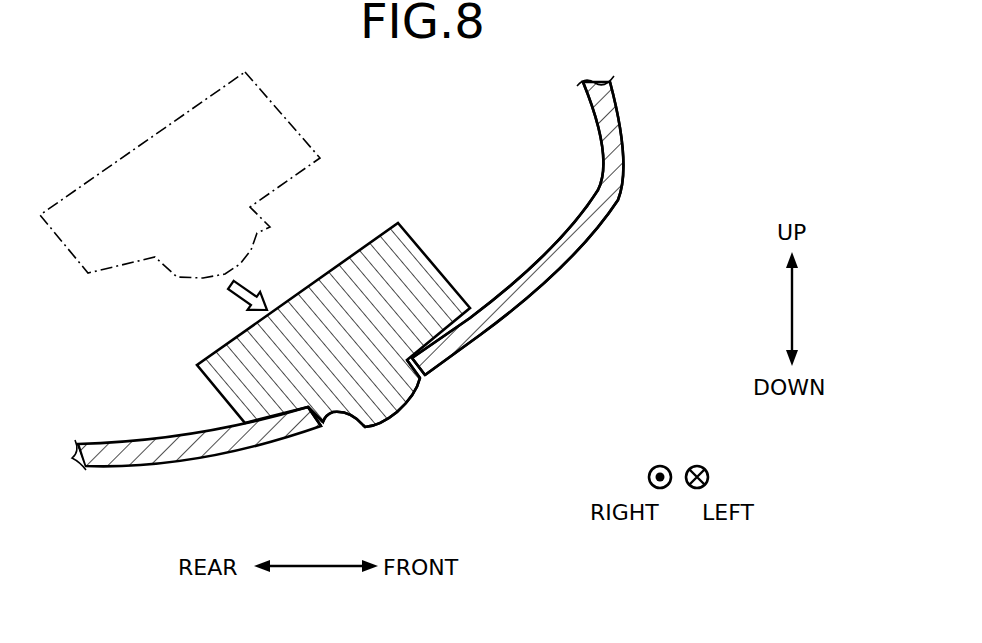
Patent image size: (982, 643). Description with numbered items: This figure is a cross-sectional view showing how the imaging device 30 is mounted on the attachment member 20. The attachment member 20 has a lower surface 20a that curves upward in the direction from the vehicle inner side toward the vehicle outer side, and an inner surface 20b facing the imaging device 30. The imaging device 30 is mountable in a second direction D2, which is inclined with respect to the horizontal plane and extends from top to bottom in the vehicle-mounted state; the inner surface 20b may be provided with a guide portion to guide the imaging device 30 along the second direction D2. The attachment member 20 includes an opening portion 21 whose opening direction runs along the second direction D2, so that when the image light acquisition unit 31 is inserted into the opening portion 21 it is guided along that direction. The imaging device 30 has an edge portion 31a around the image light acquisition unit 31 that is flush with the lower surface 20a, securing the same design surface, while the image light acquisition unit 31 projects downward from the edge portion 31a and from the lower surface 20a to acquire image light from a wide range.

The attachment member 20 is at (556, 265).
The lower surface 20a is at (500, 320).
The inner surface 20b is at (507, 287).
The opening portion 21 is at (364, 430).
The imaging device 30 is at (398, 221).
The image light acquisition unit 31 is at (403, 413).
The edge portion 31a is at (421, 386).
The second direction D2 is at (247, 283).